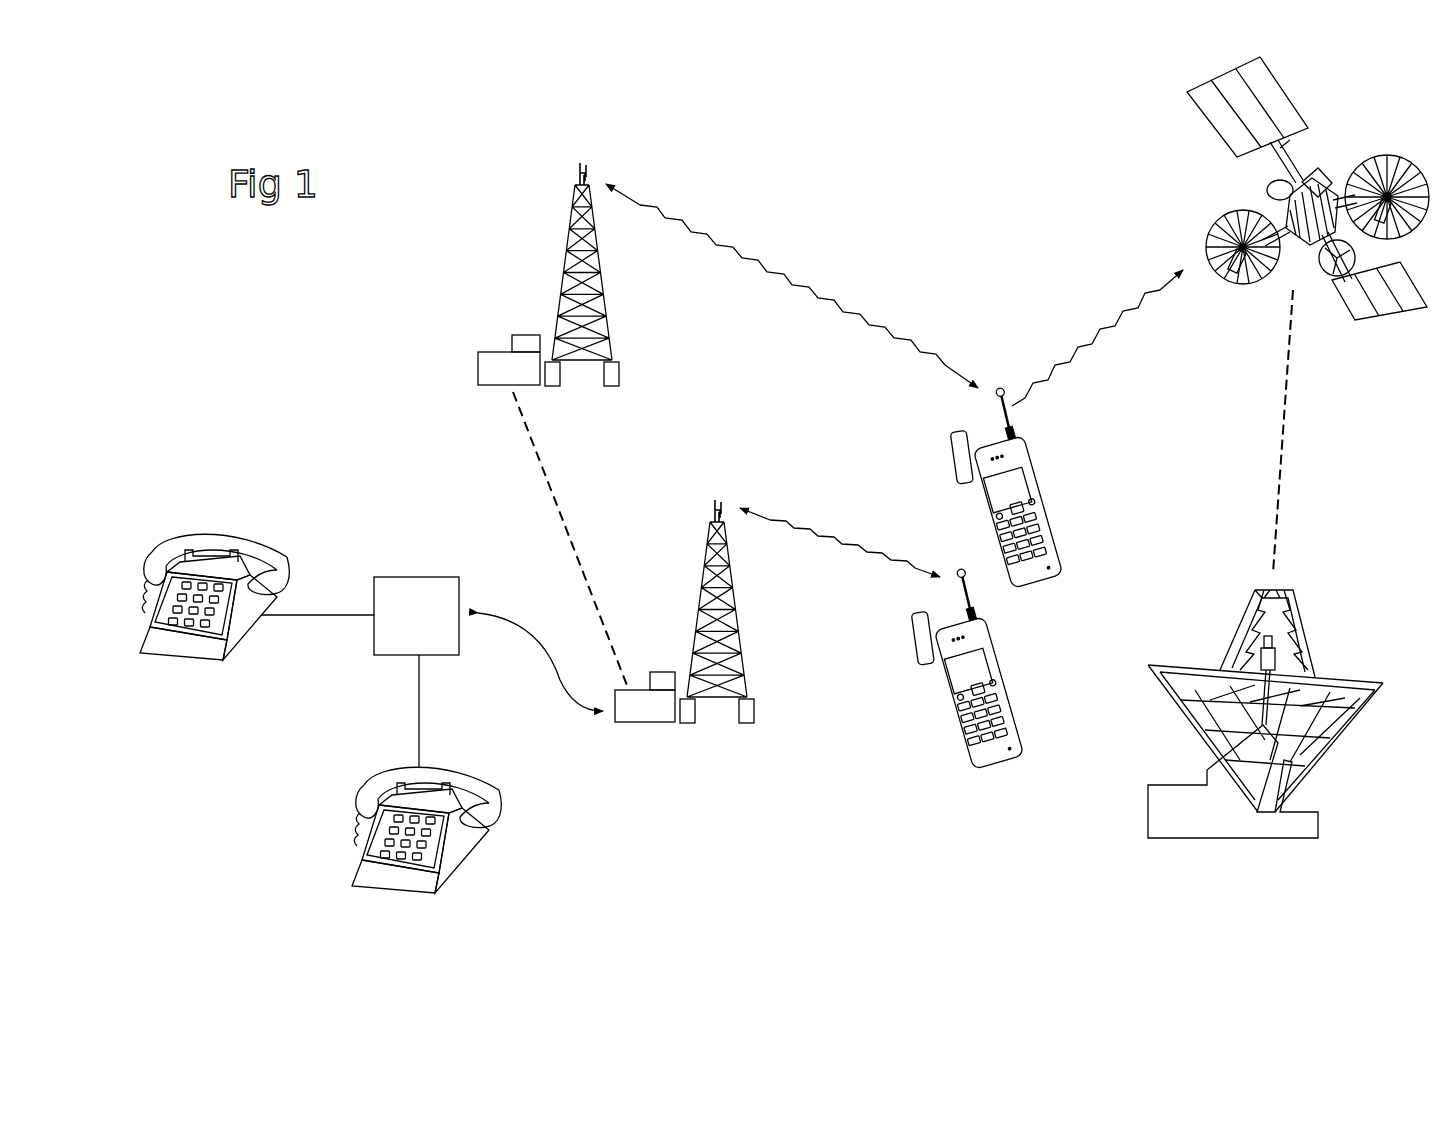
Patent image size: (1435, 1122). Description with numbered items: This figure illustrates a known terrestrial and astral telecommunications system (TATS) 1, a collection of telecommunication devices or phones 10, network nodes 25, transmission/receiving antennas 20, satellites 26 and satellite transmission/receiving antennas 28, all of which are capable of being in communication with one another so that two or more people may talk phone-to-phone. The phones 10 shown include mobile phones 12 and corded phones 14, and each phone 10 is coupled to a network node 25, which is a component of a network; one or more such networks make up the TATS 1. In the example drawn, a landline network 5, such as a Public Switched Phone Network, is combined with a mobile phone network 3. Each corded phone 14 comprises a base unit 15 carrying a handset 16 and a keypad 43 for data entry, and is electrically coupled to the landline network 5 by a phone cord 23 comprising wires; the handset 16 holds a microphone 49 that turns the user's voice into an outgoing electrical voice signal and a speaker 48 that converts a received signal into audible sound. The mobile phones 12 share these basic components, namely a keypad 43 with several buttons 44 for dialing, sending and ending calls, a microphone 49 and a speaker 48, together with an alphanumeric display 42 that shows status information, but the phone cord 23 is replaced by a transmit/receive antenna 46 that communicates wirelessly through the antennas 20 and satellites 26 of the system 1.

The terrestrial and astral telecommunications system 1 is at (836, 151).
The mobile phone network 3 is at (895, 290).
The landline network 5 is at (324, 612).
The telecommunication devices or phones 10 is at (1070, 494).
The mobile phone 12 is at (1046, 462).
The corded phone 14 is at (196, 628).
The base unit 15 is at (125, 539).
The handset 16 is at (217, 516).
The transmission/receiving antennas 20 is at (573, 236).
The phone cord 23 is at (296, 618).
The network node 25 is at (508, 350).
The satellite 26 is at (1318, 180).
The satellite transmission/receiving antenna 28 is at (1305, 640).
The alphanumeric display 42 is at (989, 712).
The keypad 43 is at (199, 670).
The buttons 44 is at (192, 664).
The transmit/receive antenna 46 is at (966, 594).
The speaker 48 is at (464, 824).
The microphone 49 is at (359, 775).